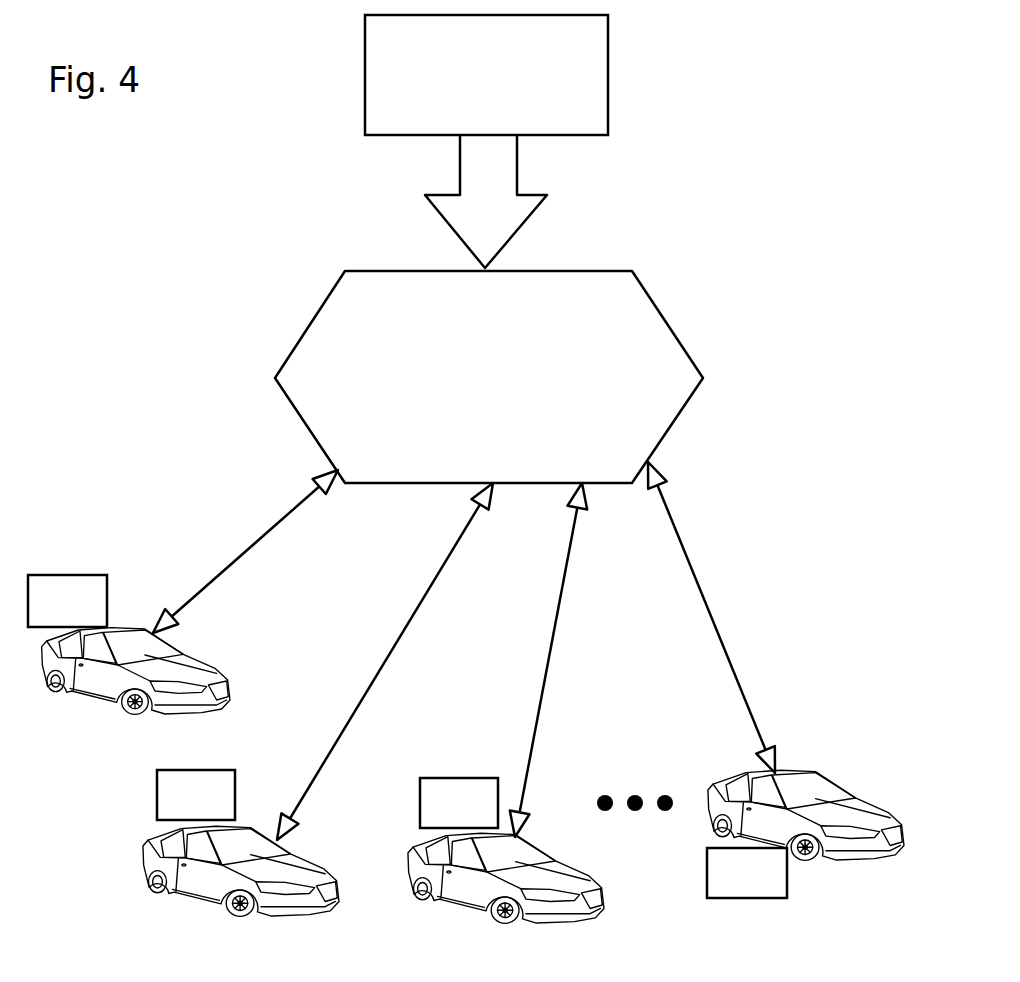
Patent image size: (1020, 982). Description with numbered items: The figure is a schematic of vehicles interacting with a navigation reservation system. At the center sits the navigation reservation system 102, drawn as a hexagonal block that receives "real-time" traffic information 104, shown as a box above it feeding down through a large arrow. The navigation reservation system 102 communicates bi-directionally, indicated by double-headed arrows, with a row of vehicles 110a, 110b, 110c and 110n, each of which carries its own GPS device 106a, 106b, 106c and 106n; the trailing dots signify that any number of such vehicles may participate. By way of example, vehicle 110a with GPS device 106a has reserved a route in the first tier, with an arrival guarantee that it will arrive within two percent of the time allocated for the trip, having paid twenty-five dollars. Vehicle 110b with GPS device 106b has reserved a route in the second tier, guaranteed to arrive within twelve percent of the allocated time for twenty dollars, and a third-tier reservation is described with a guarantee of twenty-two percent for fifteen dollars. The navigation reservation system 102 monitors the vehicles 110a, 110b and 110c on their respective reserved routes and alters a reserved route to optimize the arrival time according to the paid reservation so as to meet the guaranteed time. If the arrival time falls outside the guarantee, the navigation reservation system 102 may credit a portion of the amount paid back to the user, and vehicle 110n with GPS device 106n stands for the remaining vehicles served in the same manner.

The navigation reservation system 102 is at (647, 288).
The real-time traffic information source 104 is at (610, 82).
The GPS device 106a is at (68, 573).
The GPS device 106b is at (222, 763).
The GPS device 106c is at (450, 777).
The GPS device 106n is at (750, 900).
The vehicle 110a is at (105, 695).
The vehicle 110b is at (198, 882).
The vehicle 110c is at (563, 915).
The vehicle 110n is at (813, 768).